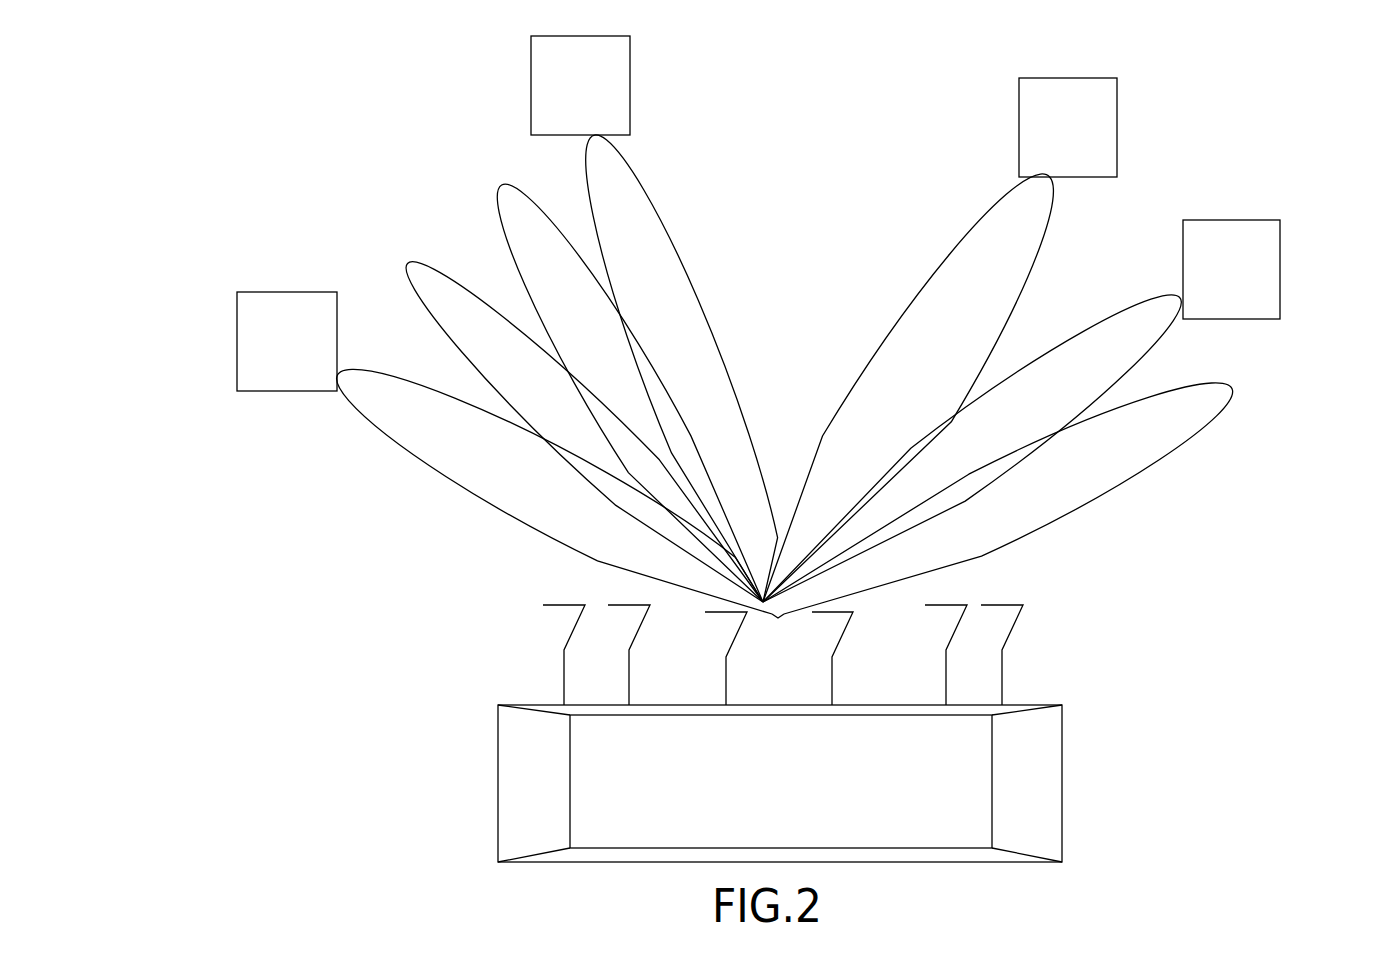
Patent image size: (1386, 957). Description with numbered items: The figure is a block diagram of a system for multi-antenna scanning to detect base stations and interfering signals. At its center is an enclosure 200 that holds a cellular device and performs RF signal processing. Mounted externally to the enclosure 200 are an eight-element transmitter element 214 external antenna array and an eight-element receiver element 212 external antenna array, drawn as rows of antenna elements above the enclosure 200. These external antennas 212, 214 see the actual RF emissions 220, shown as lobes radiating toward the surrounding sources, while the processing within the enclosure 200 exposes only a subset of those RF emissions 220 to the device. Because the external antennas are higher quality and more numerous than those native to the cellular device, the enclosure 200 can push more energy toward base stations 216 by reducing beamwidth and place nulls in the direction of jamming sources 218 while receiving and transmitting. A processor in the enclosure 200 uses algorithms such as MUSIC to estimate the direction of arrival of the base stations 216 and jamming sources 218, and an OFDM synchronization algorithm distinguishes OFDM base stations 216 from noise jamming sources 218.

The enclosure 200 is at (1062, 790).
The receiver element external antenna 212 is at (1020, 622).
The transmitter element external antenna 214 is at (545, 623).
The base stations 216 is at (630, 85).
The jamming sources 218 is at (237, 338).
The RF emissions 220 is at (689, 274).